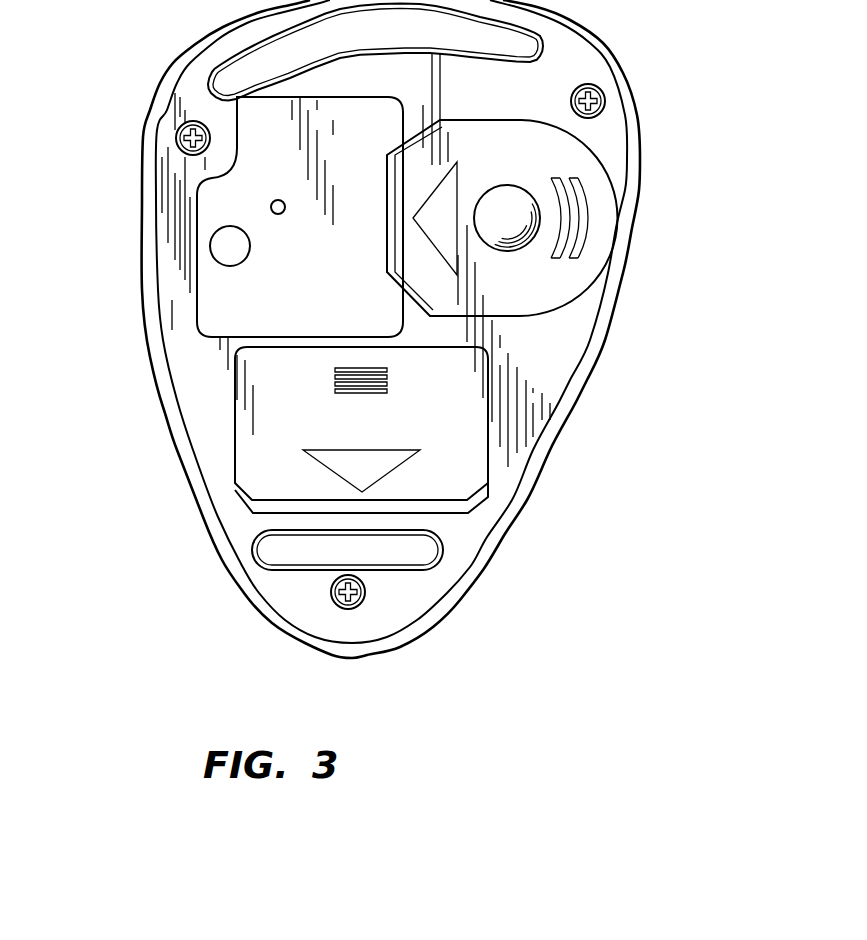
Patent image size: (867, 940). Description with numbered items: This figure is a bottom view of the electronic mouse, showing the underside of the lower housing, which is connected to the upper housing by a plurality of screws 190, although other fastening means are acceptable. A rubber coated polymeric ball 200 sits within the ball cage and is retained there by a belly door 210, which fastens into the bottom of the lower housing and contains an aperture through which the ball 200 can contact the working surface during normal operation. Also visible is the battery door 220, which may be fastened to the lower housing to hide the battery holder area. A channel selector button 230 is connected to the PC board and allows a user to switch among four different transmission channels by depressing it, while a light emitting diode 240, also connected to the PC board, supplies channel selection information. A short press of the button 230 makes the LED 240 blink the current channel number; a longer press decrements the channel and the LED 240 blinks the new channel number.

The screws 190 is at (603, 90).
The ball 200 is at (525, 206).
The belly door 210 is at (597, 228).
The battery door 220 is at (457, 463).
The channel selector button 230 is at (210, 244).
The light emitting diode 240 is at (271, 205).